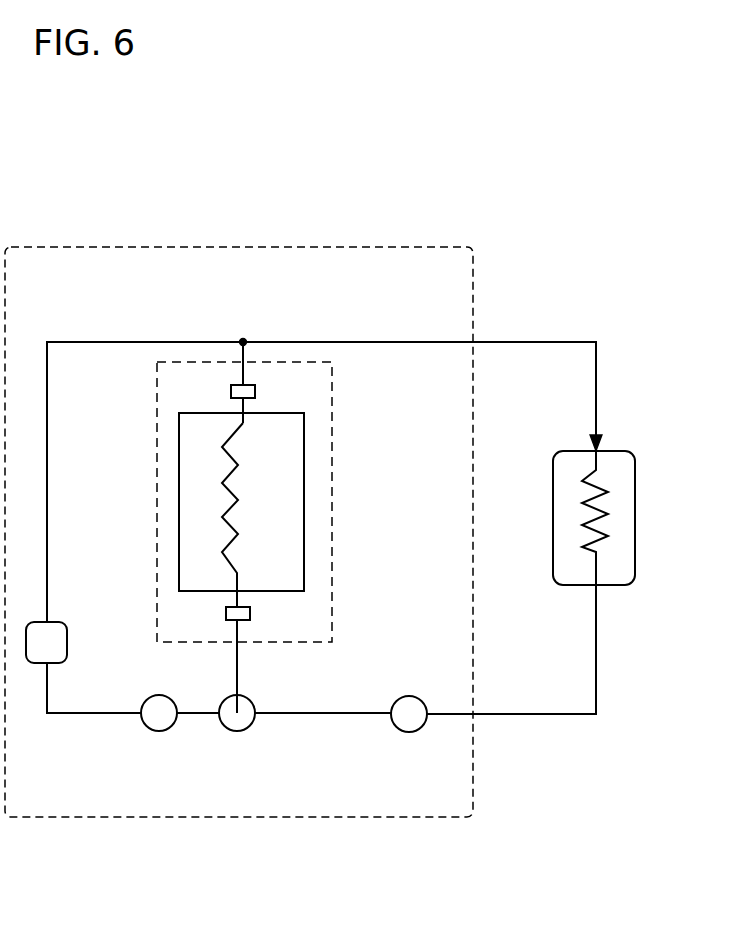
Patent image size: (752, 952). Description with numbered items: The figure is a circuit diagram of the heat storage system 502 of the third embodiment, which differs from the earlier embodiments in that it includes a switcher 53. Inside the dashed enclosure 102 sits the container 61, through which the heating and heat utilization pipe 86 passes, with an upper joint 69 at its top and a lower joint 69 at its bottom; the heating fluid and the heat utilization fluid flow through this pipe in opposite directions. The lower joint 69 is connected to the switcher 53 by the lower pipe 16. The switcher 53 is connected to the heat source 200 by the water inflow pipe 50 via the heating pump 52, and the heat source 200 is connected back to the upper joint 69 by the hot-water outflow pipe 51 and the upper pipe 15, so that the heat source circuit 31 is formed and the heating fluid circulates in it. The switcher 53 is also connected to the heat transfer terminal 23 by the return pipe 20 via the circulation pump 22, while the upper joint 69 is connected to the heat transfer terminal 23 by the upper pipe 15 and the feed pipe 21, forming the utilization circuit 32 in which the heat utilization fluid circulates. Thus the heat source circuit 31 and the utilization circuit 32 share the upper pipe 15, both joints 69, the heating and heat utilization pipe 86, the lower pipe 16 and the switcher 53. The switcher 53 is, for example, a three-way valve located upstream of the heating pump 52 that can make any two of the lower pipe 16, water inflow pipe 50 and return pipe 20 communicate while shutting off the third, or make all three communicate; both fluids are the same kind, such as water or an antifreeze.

The heat storage system 502 is at (370, 247).
The battery pack 102 is at (157, 425).
The hot-water outflow pipe 51 is at (90, 342).
The heat source circuit 31 is at (143, 330).
The feed pipe 21 is at (332, 342).
The utilization circuit 32 is at (388, 330).
The upper pipe 15 is at (246, 355).
The joint 69 is at (255, 391).
The container 61 is at (304, 440).
The heating and heat utilization pipe 86 is at (223, 483).
The lower pipe 16 is at (238, 668).
The heat source 200 is at (67, 640).
The water inflow pipe 50 is at (98, 713).
The heating pump 52 is at (159, 731).
The switcher 53 is at (237, 731).
The return pipe 20 is at (352, 714).
The circulation pump 22 is at (409, 732).
The heat transfer terminal 23 is at (622, 451).